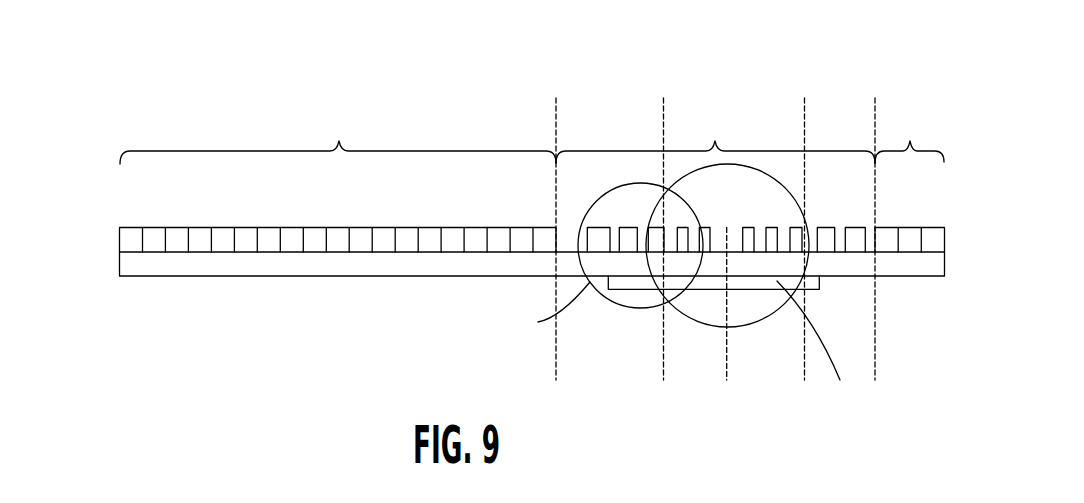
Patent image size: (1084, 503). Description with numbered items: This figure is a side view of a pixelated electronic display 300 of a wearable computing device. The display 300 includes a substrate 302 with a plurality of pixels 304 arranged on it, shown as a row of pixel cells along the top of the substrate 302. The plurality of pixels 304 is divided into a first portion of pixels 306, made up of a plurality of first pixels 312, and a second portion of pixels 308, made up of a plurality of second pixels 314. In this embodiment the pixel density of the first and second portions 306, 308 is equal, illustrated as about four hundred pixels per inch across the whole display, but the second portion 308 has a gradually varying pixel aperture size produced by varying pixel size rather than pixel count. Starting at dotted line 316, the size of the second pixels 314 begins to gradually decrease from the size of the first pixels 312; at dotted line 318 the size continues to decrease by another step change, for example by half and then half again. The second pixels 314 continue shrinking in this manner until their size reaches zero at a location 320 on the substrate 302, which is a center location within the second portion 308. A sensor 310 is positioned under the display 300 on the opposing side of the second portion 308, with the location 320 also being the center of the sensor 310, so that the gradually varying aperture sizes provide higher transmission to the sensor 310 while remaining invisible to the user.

The pixelated electronic display 300 is at (906, 61).
The substrate 302 is at (188, 278).
The plurality of pixels 304 is at (118, 244).
The first portion of pixels 306 is at (532, 138).
The second portion of pixels 308 is at (715, 137).
The sensor 310 is at (753, 290).
The first pixels 312 is at (552, 182).
The second pixels 314 is at (726, 182).
The dotted line 316 is at (557, 366).
The dotted line 318 is at (662, 366).
The location 320 is at (728, 366).